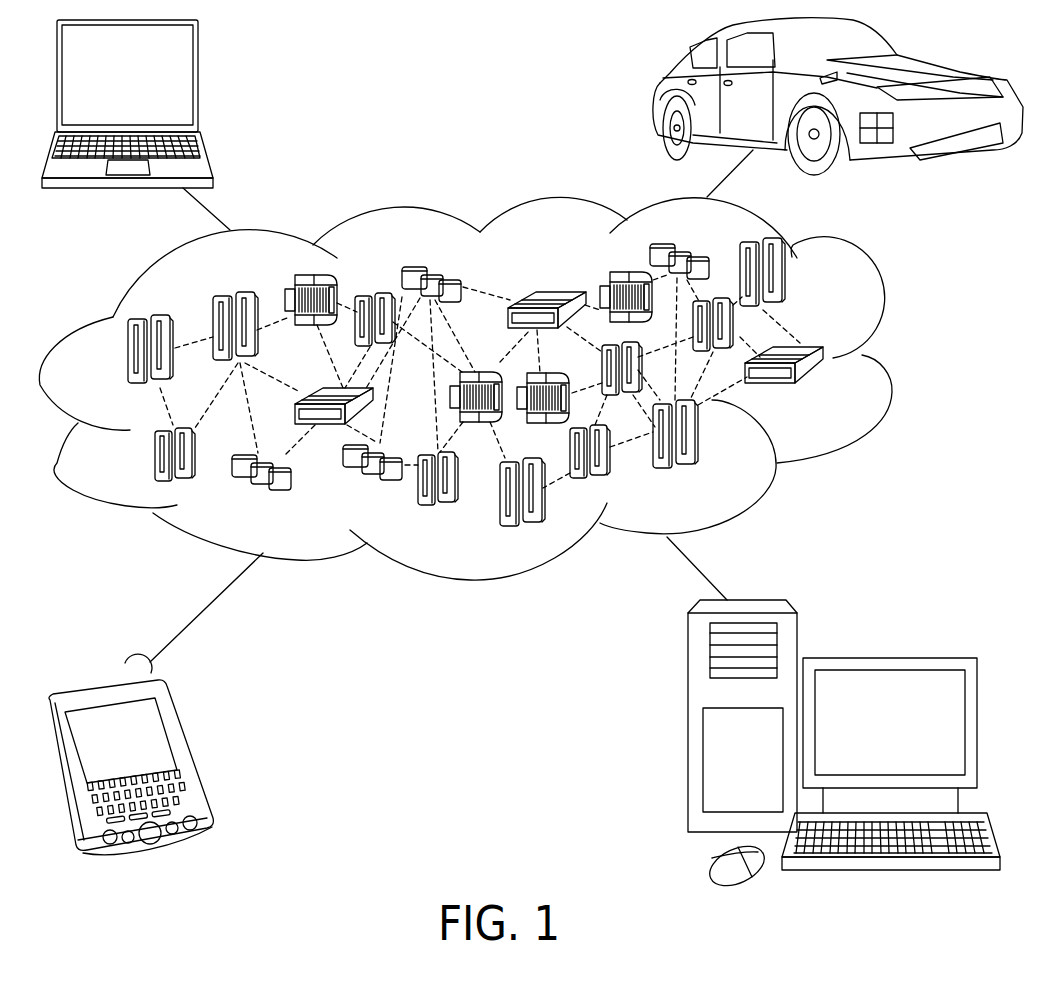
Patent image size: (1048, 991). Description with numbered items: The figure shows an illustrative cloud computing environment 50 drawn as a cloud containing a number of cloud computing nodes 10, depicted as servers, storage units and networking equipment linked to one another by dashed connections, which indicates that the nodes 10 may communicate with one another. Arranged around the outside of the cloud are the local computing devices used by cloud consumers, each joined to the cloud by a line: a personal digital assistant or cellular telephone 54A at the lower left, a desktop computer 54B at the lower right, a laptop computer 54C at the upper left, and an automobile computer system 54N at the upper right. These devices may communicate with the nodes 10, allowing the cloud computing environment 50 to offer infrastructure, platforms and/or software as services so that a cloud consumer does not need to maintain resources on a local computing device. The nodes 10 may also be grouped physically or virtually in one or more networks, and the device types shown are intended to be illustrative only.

The cloud computing nodes 10 is at (493, 388).
The cloud computing environment 50 is at (887, 362).
The personal digital assistant or cellular telephone 54A is at (187, 757).
The desktop computer 54B is at (885, 657).
The laptop computer 54C is at (200, 83).
The automobile computer system 54N is at (660, 100).